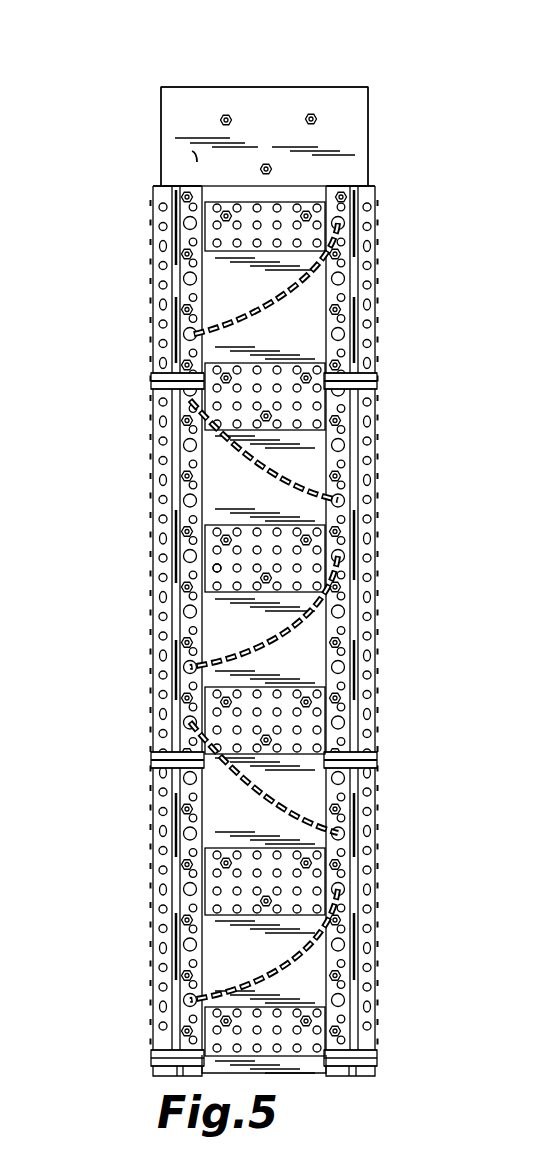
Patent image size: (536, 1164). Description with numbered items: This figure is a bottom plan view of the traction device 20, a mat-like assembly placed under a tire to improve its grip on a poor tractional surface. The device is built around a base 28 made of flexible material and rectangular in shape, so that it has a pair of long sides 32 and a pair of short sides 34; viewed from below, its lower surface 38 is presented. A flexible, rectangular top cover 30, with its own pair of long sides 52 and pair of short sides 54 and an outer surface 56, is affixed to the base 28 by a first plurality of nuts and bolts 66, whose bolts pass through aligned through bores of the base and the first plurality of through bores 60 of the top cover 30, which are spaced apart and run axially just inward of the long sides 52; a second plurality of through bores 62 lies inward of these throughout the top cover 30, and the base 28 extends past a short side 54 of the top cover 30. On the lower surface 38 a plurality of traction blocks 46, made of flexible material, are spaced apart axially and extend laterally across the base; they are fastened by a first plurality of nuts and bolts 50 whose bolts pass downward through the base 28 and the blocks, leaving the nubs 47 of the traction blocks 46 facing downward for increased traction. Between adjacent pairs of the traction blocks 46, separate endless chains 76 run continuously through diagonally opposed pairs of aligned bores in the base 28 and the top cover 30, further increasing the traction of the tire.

The traction device 20 is at (94, 229).
The base 28 is at (218, 78).
The short sides 34 is at (258, 87).
The long sides 32 is at (156, 102).
The lower surface 38 is at (197, 162).
The short sides 54 is at (354, 180).
The long sides 52 is at (207, 288).
The first plurality of nuts and bolts 66 is at (353, 262).
The outer surface 56 is at (162, 326).
The top cover 30 is at (148, 417).
The first plurality of nuts and bolts 50 is at (288, 413).
The traction blocks 46 is at (229, 521).
The nubs 47 is at (214, 569).
The first plurality of through bores 60 is at (186, 641).
The second plurality of through bores 62 is at (154, 722).
The endless chains 76 is at (247, 802).